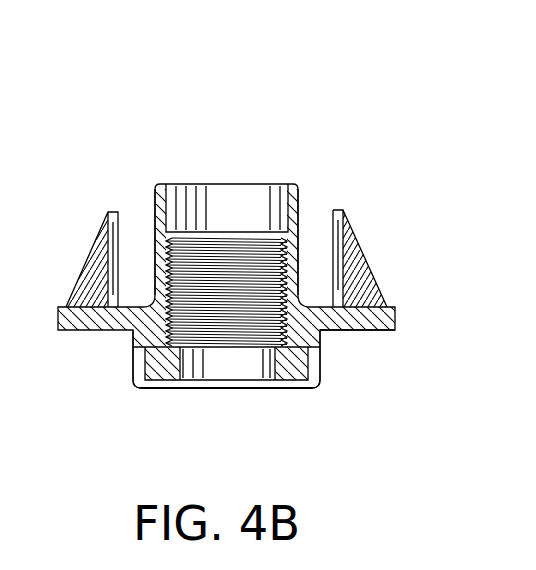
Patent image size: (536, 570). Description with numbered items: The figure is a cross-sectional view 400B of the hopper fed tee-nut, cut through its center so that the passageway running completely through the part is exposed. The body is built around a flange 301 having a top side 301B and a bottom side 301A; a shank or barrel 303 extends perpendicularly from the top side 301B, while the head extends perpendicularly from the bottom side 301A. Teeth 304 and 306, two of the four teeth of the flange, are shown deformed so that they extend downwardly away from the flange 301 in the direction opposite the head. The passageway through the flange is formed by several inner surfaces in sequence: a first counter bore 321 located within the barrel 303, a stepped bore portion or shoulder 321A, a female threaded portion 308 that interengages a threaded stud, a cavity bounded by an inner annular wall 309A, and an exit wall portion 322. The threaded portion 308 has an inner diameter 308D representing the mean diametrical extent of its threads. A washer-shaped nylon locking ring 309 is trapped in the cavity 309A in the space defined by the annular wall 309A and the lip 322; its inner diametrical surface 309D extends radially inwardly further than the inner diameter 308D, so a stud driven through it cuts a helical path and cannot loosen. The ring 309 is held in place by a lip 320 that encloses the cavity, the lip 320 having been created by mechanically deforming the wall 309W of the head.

The cross-sectional view 400B is at (267, 83).
The flange 301 is at (395, 304).
The bottom side of flange 301A is at (363, 331).
The top side of flange 301B is at (323, 304).
The shank or barrel 303 is at (156, 198).
The tooth 304 is at (355, 238).
The tooth 306 is at (105, 248).
The female threaded portion 308 is at (197, 302).
The inner diameter of threaded portion 308D is at (280, 257).
The nylon locking ring 309 is at (287, 384).
The cavity or inner annular wall 309A is at (303, 368).
The inner diametrical surface of locking ring 309D is at (273, 363).
The wall 309W is at (133, 363).
The lip 320 is at (157, 388).
The first counter bore 321 is at (290, 205).
The stepped bore portion or shoulder 321A is at (165, 228).
The exit wall portion or lip 322 is at (165, 380).